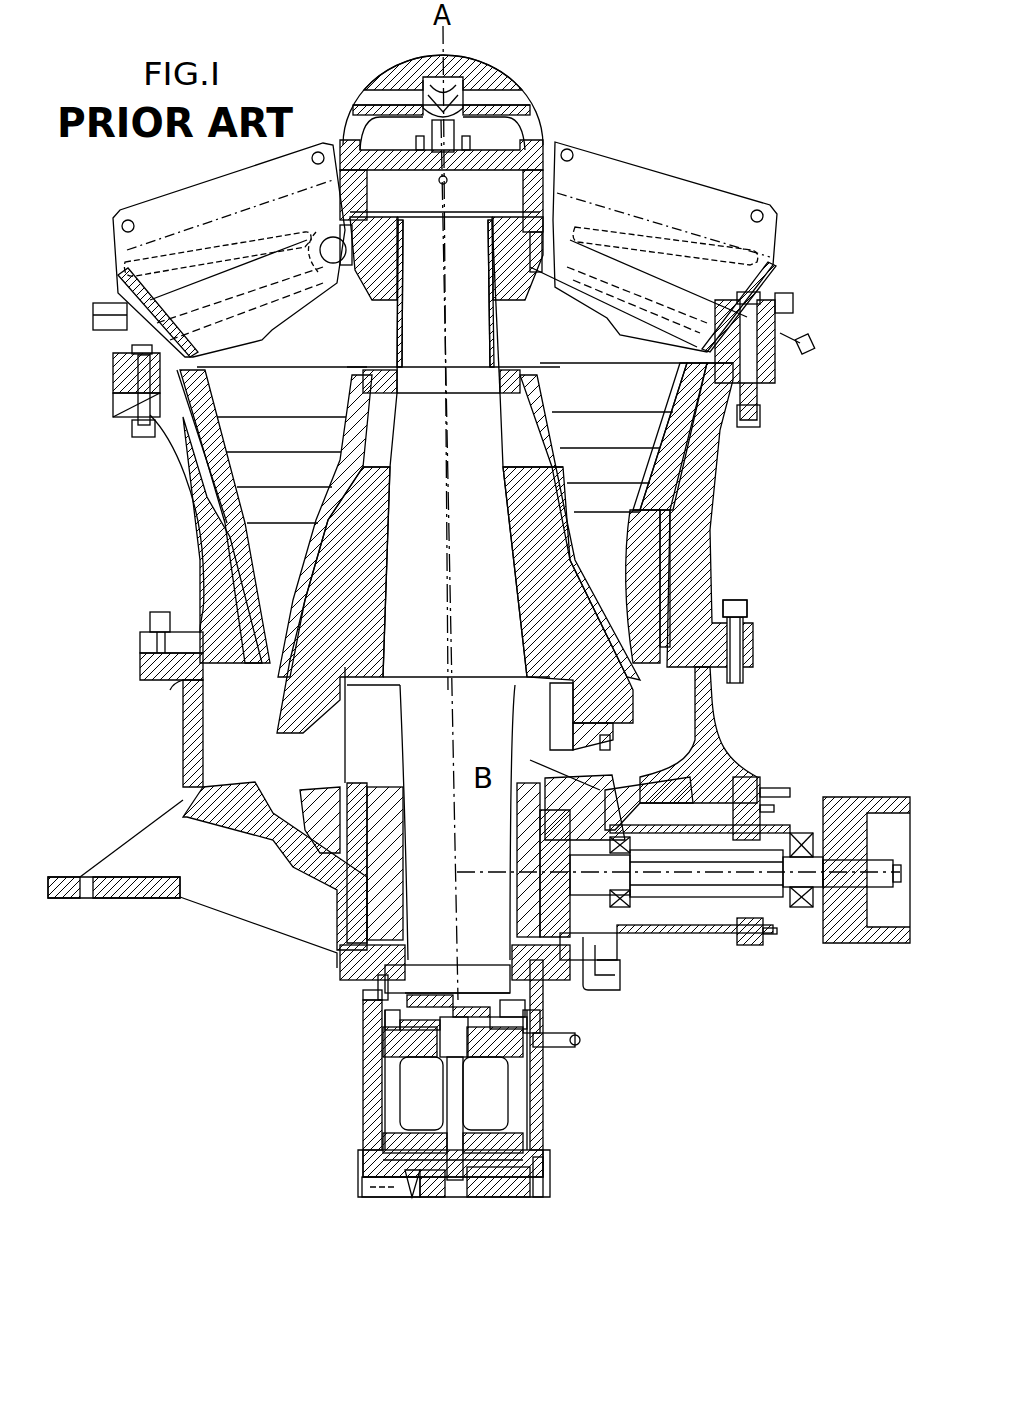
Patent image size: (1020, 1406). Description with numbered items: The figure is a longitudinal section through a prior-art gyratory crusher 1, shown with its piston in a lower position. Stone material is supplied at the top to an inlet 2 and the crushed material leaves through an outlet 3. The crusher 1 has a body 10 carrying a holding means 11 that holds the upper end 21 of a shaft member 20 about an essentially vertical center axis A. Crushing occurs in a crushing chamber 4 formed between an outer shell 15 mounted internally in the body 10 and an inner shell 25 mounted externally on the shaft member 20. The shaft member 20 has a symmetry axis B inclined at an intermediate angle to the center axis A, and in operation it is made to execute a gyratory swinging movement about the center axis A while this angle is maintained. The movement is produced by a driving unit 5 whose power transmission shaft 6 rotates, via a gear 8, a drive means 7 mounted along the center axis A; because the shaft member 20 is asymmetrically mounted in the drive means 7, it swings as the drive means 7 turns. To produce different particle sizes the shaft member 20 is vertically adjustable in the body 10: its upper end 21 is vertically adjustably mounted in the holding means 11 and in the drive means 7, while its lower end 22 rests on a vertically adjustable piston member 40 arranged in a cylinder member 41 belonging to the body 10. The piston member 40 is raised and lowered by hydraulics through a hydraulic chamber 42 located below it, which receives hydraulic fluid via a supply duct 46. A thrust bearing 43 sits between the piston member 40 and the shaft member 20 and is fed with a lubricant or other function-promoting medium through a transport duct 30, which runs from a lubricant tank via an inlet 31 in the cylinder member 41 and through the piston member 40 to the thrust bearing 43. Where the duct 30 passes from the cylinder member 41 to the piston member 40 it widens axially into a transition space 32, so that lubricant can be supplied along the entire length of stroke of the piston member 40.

The gyratory crusher 1 is at (445, 230).
The inlet 2 is at (447, 605).
The outlet 3 is at (436, 638).
The crushing chamber 4 is at (476, 513).
The driving unit 5 is at (735, 870).
The power transmission shaft 6 is at (735, 913).
The drive means 7 is at (453, 861).
The gear 8 is at (611, 795).
The body 10 is at (777, 395).
The holding means 11 is at (653, 227).
The outer shell 15 is at (704, 436).
The shaft member 20 is at (618, 716).
The upper end 21 is at (441, 177).
The lower end 22 is at (400, 983).
The inner shell 25 is at (458, 550).
The transport duct 30 is at (568, 1061).
The inlet 31 is at (540, 1020).
The transition space 32 is at (472, 1078).
The piston member 40 is at (418, 1093).
The cylinder member 41 is at (399, 1014).
The hydraulic chamber 42 is at (481, 1200).
The thrust bearing 43 is at (470, 1056).
The supply duct 46 is at (391, 1207).